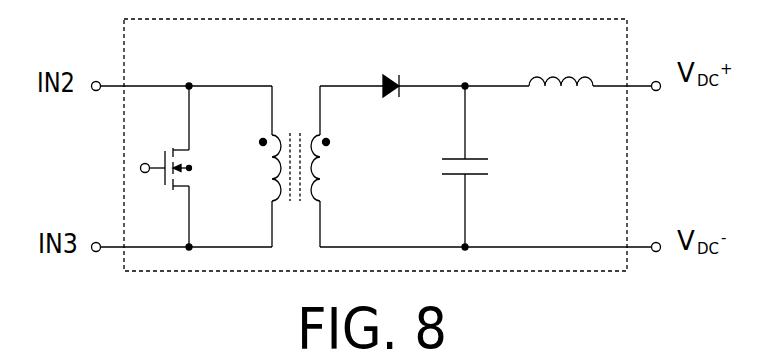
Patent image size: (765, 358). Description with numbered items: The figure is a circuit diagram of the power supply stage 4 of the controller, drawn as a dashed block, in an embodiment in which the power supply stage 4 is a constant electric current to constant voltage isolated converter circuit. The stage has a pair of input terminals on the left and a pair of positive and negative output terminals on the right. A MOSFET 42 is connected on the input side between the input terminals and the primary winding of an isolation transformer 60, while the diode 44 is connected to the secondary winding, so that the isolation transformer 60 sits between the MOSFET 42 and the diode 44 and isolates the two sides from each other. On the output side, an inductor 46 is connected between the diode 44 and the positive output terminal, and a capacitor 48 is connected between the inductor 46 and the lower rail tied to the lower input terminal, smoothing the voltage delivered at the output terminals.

The power supply stage 4 is at (160, 280).
The MOSFET 42 is at (165, 154).
The diode 44 is at (383, 82).
The inductor 46 is at (552, 77).
The capacitor 48 is at (486, 173).
The isolation transformer 60 is at (322, 166).